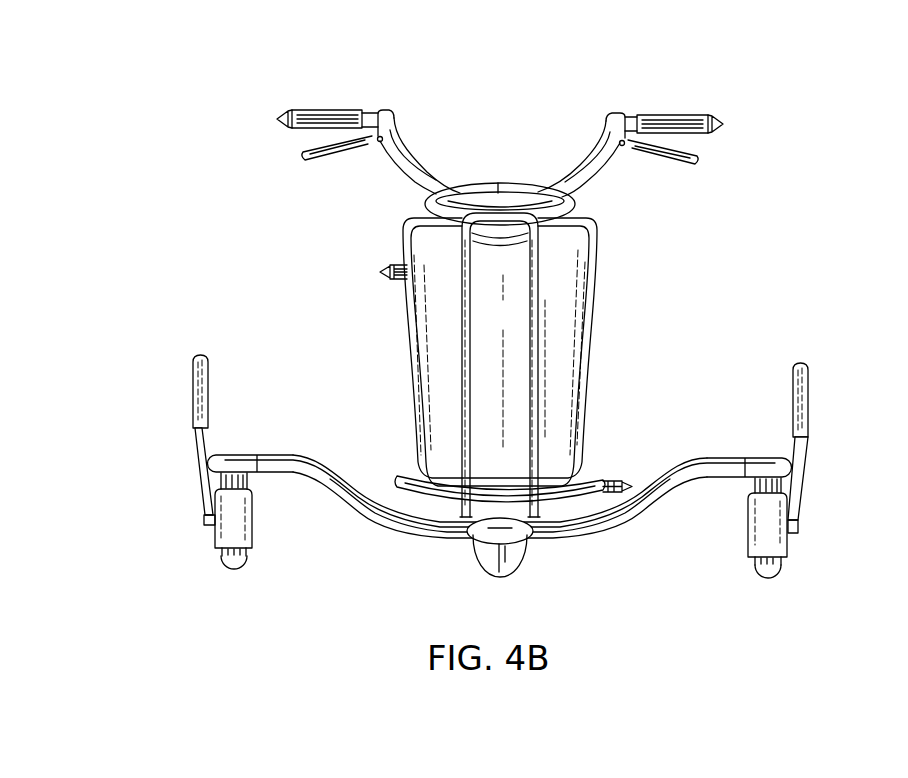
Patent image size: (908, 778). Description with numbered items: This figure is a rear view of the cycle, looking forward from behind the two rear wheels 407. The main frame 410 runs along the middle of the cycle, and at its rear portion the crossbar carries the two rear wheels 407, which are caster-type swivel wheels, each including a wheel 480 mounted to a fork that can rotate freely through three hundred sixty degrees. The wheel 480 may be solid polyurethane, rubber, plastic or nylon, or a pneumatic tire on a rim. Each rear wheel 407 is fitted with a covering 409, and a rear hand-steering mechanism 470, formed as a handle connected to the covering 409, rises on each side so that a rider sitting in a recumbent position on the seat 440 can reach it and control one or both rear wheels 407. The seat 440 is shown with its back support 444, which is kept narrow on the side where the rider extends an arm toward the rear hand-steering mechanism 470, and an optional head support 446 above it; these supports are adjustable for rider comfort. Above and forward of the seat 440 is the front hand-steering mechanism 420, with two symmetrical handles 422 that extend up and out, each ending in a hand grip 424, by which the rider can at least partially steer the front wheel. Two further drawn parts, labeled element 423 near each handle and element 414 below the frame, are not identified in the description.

The rear wheel 407 is at (823, 533).
The covering of a rear wheel 409 is at (213, 533).
The main frame 410 is at (483, 563).
The cup rim 414 is at (513, 538).
The front hand-steering mechanism 420 is at (477, 137).
The handle 422 is at (388, 160).
The lever 423 is at (311, 161).
The hand grip 424 is at (338, 110).
The seat 440 is at (652, 282).
The back support 444 is at (587, 343).
The head support 446 is at (505, 187).
The rear hand-steering mechanism 470 is at (188, 398).
The wheel 480 is at (237, 572).